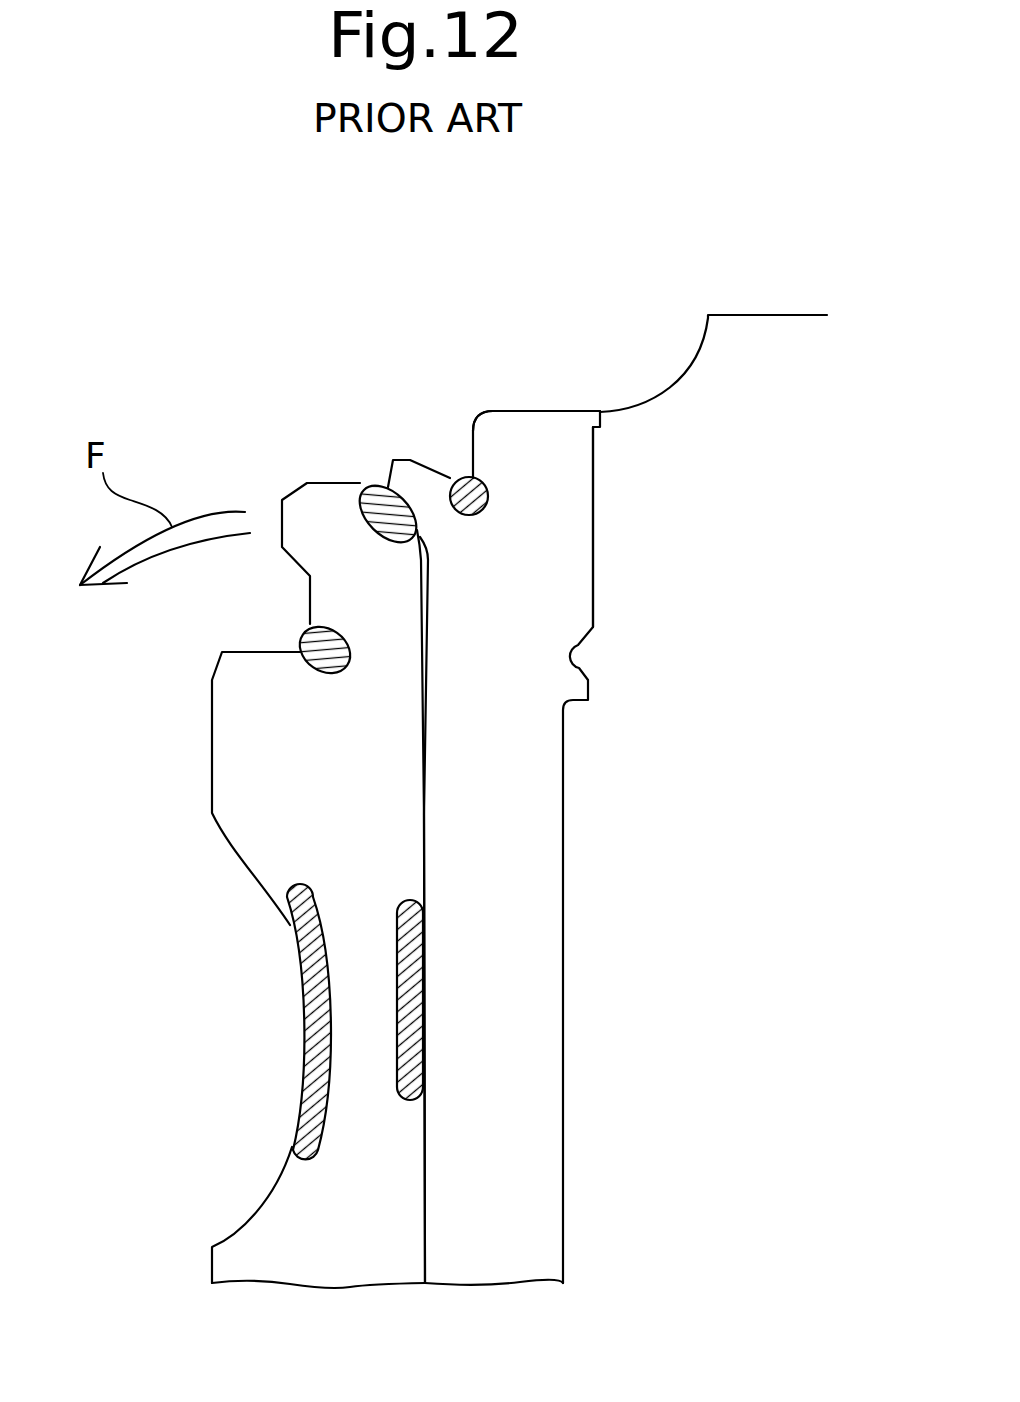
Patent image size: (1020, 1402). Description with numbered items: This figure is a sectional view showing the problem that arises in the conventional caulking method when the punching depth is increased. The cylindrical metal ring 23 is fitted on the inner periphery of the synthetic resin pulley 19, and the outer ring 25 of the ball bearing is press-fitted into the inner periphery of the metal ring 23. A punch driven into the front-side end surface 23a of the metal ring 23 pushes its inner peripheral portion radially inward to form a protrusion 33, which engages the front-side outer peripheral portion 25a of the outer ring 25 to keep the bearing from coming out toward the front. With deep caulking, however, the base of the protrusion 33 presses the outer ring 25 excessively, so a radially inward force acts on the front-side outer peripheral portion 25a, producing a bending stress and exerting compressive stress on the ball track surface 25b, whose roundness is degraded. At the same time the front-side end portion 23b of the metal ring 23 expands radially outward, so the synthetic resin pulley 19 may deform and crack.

The synthetic resin pulley 19 is at (757, 314).
The metal ring 23 is at (495, 808).
The front-side end surface 23a is at (537, 410).
The front-side end portion 23b is at (593, 487).
The outer ring 25 is at (212, 722).
The front-side outer peripheral portion 25a is at (393, 460).
The ball track surface 25b is at (300, 968).
The protrusion 33 is at (430, 467).